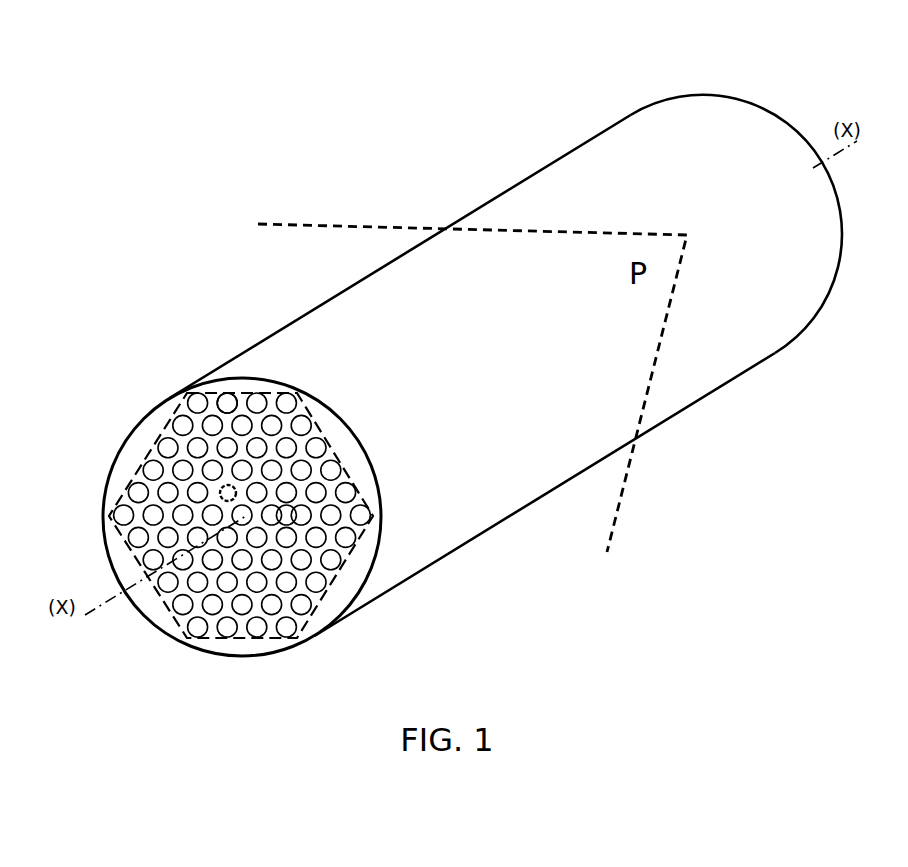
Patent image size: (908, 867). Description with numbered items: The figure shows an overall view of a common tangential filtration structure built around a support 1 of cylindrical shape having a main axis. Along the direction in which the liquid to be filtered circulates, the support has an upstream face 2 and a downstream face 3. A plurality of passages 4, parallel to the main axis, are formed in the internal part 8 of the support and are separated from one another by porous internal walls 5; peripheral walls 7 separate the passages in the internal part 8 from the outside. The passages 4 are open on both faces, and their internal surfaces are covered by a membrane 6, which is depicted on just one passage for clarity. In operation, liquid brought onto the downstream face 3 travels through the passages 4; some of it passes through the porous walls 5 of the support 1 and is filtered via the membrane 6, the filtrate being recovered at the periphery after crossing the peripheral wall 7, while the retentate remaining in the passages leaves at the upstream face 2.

The support 1 is at (755, 335).
The upstream face 2 is at (198, 647).
The downstream face 3 is at (735, 112).
The passages 4 is at (258, 583).
The porous internal walls 5 is at (288, 518).
The membrane 6 is at (220, 487).
The peripheral walls 7 is at (137, 457).
The internal part 8 is at (225, 395).